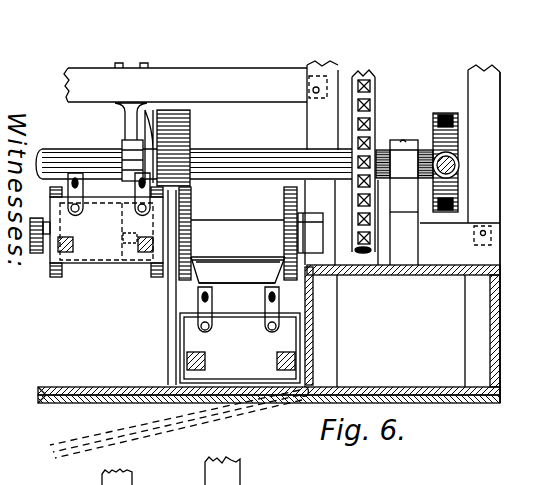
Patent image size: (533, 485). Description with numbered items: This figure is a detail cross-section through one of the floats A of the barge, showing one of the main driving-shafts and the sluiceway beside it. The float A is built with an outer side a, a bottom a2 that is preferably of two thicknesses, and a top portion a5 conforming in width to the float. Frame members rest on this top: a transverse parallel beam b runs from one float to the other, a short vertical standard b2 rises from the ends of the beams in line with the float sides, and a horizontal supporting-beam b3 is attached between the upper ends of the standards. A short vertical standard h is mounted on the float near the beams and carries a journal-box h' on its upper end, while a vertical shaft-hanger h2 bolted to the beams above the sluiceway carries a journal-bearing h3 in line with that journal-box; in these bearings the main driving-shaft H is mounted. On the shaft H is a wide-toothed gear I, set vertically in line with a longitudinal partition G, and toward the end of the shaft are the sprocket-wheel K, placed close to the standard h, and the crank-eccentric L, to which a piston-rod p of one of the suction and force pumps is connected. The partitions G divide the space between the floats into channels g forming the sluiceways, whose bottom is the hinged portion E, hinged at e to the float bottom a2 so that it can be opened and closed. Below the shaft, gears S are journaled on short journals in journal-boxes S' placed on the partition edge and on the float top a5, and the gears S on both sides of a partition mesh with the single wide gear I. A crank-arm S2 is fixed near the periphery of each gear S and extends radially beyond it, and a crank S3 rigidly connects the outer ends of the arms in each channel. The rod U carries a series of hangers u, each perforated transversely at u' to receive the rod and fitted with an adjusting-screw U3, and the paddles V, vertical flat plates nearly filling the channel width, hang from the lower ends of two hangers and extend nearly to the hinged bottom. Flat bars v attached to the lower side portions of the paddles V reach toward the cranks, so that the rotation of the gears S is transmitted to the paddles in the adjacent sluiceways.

The float A is at (512, 237).
The outer side a is at (500, 371).
The bottom a2 is at (440, 404).
The top portion a5 is at (438, 266).
The parallel beam b is at (237, 240).
The short vertical standard b2 is at (402, 232).
The supporting-beam b3 is at (185, 82).
The hinged bottom portion of sluiceway E is at (105, 400).
The hinge e is at (298, 398).
The longitudinal partition G is at (168, 334).
The channel g is at (134, 348).
The main driving-shaft H is at (234, 150).
The short vertical standard h is at (398, 222).
The journal-box h' is at (404, 162).
The vertical shaft-hanger h2 is at (125, 124).
The journal-bearing h3 is at (125, 147).
The gear I is at (191, 127).
The sprocket-wheel K is at (378, 76).
The crank-eccentric L is at (446, 113).
The piston-rod p is at (460, 168).
The gear S is at (238, 233).
The journal-box S' is at (180, 246).
The crank-arm S2 is at (238, 272).
The crank S3 is at (237, 283).
The rod U is at (135, 187).
The hanger u is at (157, 267).
The adjusting-screw U3 is at (238, 270).
The transverse perforation u' is at (238, 309).
The paddle V is at (240, 348).
The flat bar v is at (176, 303).